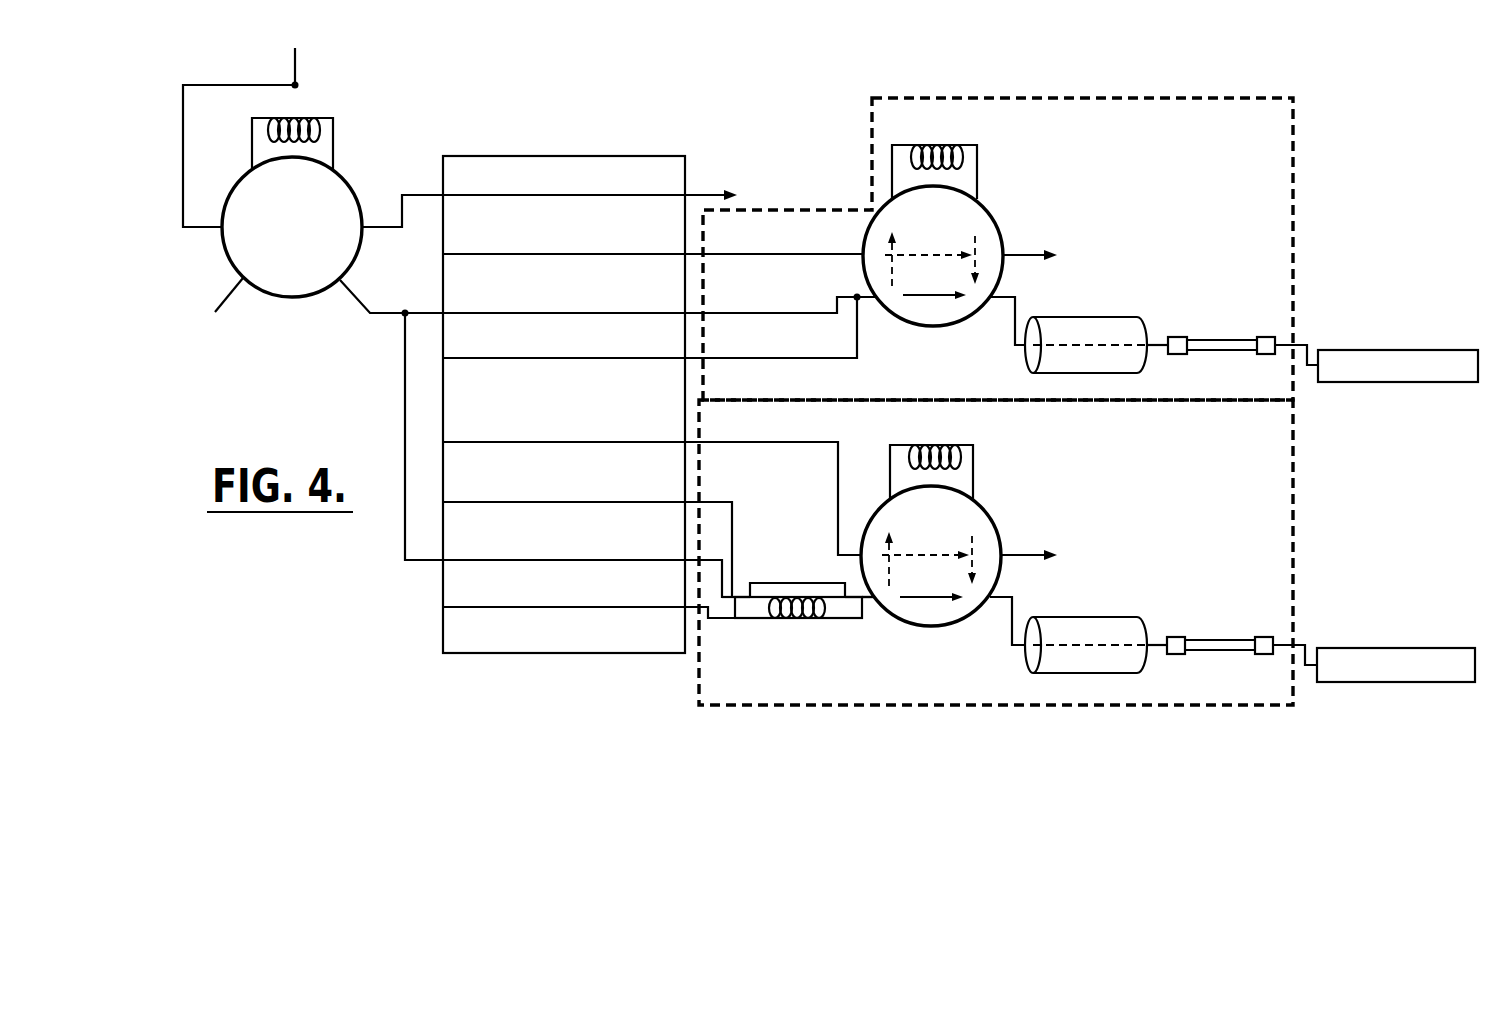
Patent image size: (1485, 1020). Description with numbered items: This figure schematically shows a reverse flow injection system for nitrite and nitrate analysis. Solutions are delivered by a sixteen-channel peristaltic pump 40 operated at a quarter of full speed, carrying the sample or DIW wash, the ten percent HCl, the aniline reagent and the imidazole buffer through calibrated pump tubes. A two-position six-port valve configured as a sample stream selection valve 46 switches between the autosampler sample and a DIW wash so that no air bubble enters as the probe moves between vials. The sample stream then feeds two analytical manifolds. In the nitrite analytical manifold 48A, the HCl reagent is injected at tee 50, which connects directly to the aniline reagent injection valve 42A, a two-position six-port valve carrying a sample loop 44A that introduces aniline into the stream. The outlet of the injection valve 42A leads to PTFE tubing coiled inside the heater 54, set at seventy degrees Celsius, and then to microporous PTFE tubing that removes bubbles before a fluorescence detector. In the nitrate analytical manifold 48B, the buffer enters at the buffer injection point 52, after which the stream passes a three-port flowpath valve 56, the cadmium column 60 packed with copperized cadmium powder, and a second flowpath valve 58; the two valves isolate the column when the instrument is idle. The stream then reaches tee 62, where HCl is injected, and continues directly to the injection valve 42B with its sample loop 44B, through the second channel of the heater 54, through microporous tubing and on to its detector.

The peristaltic pump 40 is at (505, 128).
The sample stream selection valve 46 is at (365, 168).
The injection valve 42A is at (1004, 199).
The sample loop 44A is at (971, 134).
The injection valve 42B is at (1002, 500).
The sample loop 44B is at (986, 452).
The nitrite analytical manifold 48A is at (1214, 92).
The nitrate analytical manifold 48B is at (1166, 718).
The tee 50 is at (868, 315).
The buffer injection point 52 is at (734, 616).
The heater 54 is at (1013, 369).
The flowpath valve 56 is at (750, 614).
The flowpath valve 58 is at (846, 614).
The cadmium column 60 is at (800, 634).
The tee 62 is at (878, 613).